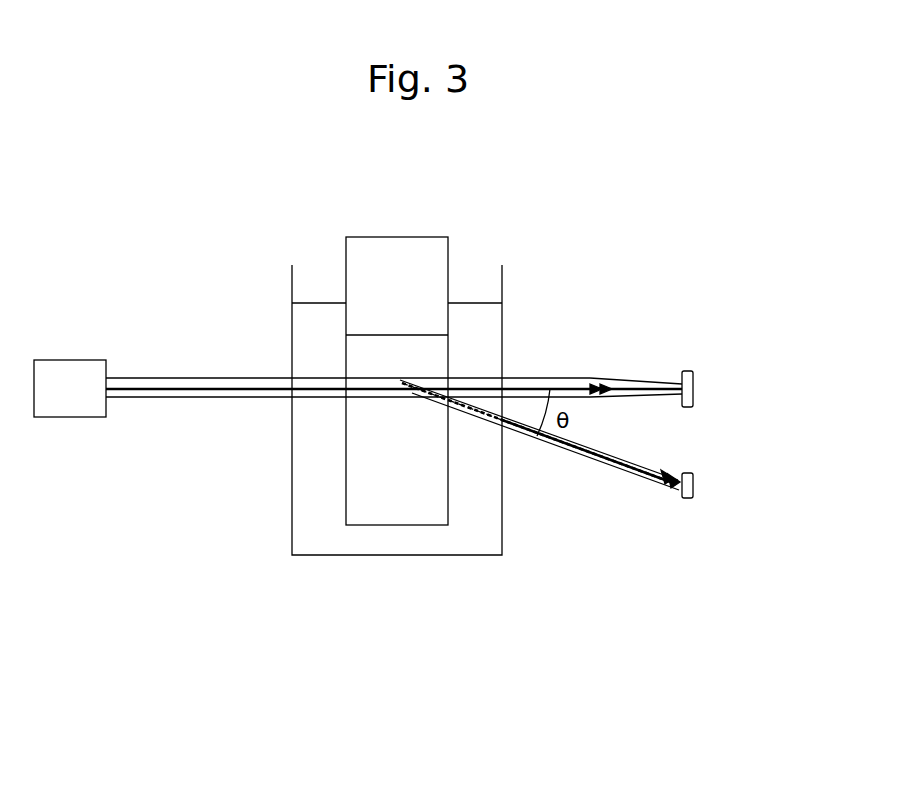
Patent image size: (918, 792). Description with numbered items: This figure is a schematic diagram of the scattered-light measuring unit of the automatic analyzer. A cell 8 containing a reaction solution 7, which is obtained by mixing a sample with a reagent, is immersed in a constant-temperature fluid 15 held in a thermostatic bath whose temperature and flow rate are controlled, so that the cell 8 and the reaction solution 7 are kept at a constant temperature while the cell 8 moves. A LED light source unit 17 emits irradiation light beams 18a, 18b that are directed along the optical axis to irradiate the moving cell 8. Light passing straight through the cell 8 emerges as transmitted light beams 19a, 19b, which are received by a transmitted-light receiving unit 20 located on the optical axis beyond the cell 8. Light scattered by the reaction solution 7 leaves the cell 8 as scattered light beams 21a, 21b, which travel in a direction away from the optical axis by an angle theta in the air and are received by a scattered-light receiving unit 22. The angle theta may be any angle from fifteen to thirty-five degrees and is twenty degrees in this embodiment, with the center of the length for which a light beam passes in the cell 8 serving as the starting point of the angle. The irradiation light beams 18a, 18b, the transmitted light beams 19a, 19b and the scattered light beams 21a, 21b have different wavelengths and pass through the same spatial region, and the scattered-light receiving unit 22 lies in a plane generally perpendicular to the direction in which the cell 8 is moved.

The reaction solution 7 is at (407, 335).
The cell 8 is at (431, 237).
The constant-temperature fluid 15 is at (328, 320).
The LED light source unit 17 is at (56, 360).
The irradiation light beam 18a is at (185, 378).
The irradiation light beam 18b is at (185, 403).
The transmitted light beam 19a is at (601, 377).
The transmitted light beam 19b is at (618, 398).
The transmitted-light receiving unit 20 is at (695, 380).
The scattered light beam 21a is at (668, 468).
The scattered light beam 21b is at (592, 454).
The scattered-light receiving unit 22 is at (695, 488).